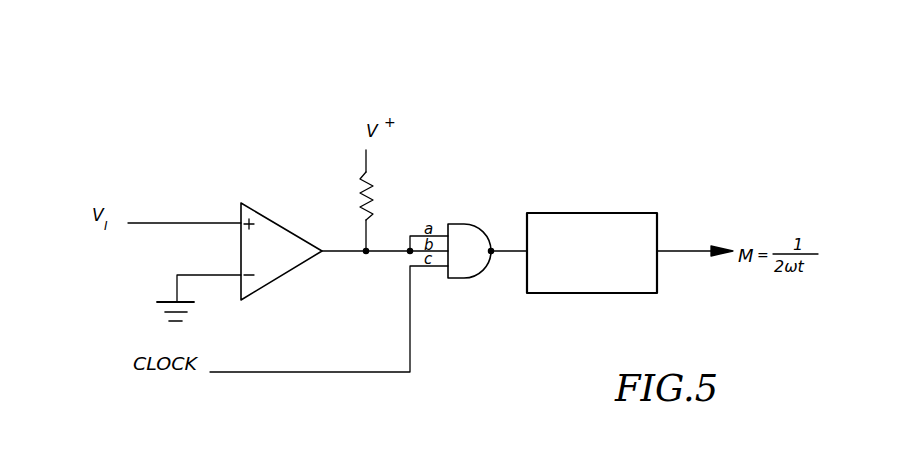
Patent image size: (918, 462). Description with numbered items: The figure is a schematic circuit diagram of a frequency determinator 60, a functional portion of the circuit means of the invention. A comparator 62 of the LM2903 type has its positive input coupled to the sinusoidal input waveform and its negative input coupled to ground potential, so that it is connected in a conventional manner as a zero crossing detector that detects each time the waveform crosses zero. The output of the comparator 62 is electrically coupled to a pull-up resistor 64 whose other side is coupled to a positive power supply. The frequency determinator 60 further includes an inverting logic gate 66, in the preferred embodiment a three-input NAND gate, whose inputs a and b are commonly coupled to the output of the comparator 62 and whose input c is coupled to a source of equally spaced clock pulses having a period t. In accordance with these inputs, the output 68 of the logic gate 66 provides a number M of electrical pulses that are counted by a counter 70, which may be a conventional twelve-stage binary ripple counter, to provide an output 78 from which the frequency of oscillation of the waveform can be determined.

The frequency determinator 60 is at (503, 138).
The comparator 62 is at (282, 224).
The pull-up resistor 64 is at (373, 193).
The inverting logic gate 66 is at (478, 229).
The output 68 is at (484, 270).
The counter 70 is at (585, 213).
The output 78 is at (657, 250).